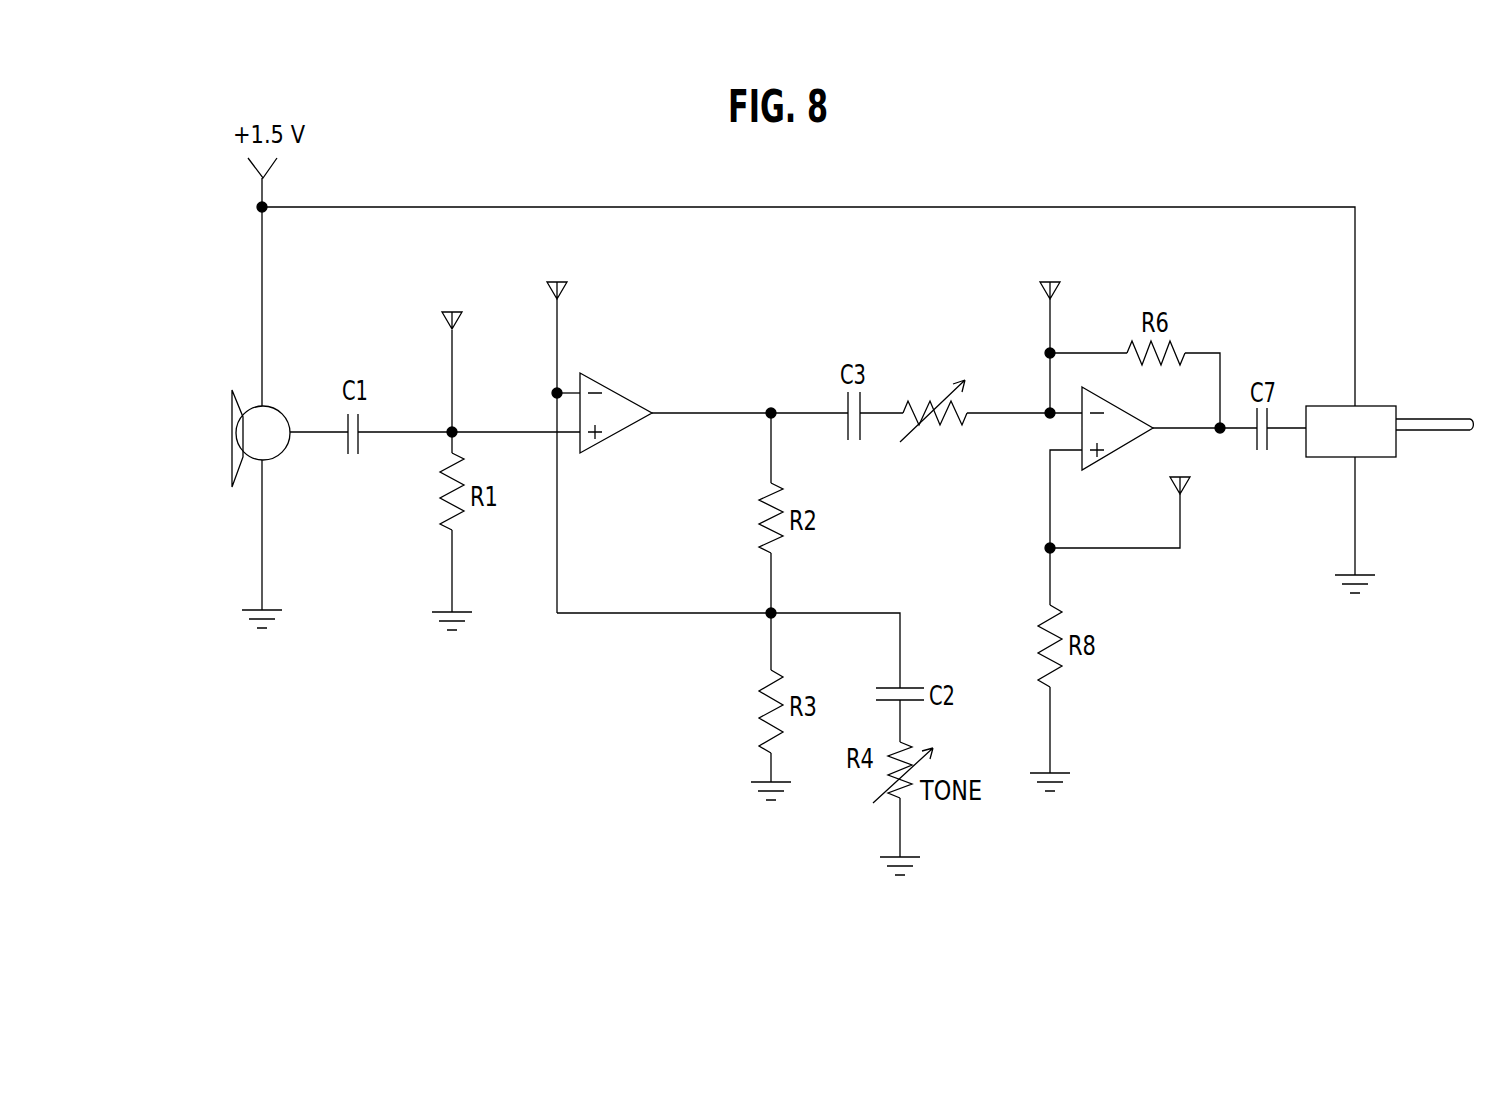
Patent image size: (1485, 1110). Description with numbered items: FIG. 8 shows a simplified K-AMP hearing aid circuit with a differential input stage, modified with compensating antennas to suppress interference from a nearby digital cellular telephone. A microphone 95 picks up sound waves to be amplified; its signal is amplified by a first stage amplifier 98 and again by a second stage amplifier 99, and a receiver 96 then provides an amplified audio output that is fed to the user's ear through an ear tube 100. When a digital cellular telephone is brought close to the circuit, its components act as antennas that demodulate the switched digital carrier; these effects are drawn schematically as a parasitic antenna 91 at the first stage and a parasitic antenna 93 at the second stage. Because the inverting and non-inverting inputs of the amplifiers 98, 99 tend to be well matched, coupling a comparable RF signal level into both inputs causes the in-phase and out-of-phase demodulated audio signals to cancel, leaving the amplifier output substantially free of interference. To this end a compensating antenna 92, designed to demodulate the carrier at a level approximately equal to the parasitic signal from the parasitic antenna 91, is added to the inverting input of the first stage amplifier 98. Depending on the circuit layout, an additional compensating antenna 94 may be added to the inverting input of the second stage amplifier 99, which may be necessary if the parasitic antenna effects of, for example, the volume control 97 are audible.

The parasitic antenna 91 is at (449, 322).
The compensating antenna 92 is at (567, 287).
The parasitic antenna 93 is at (1061, 289).
The additional compensating antenna 94 is at (1190, 486).
The microphone 95 is at (232, 417).
The receiver 96 is at (1375, 406).
The volume control 97 is at (958, 410).
The first stage amplifier 98 is at (622, 395).
The second stage amplifier 99 is at (1116, 452).
The ear tube 100 is at (1425, 431).